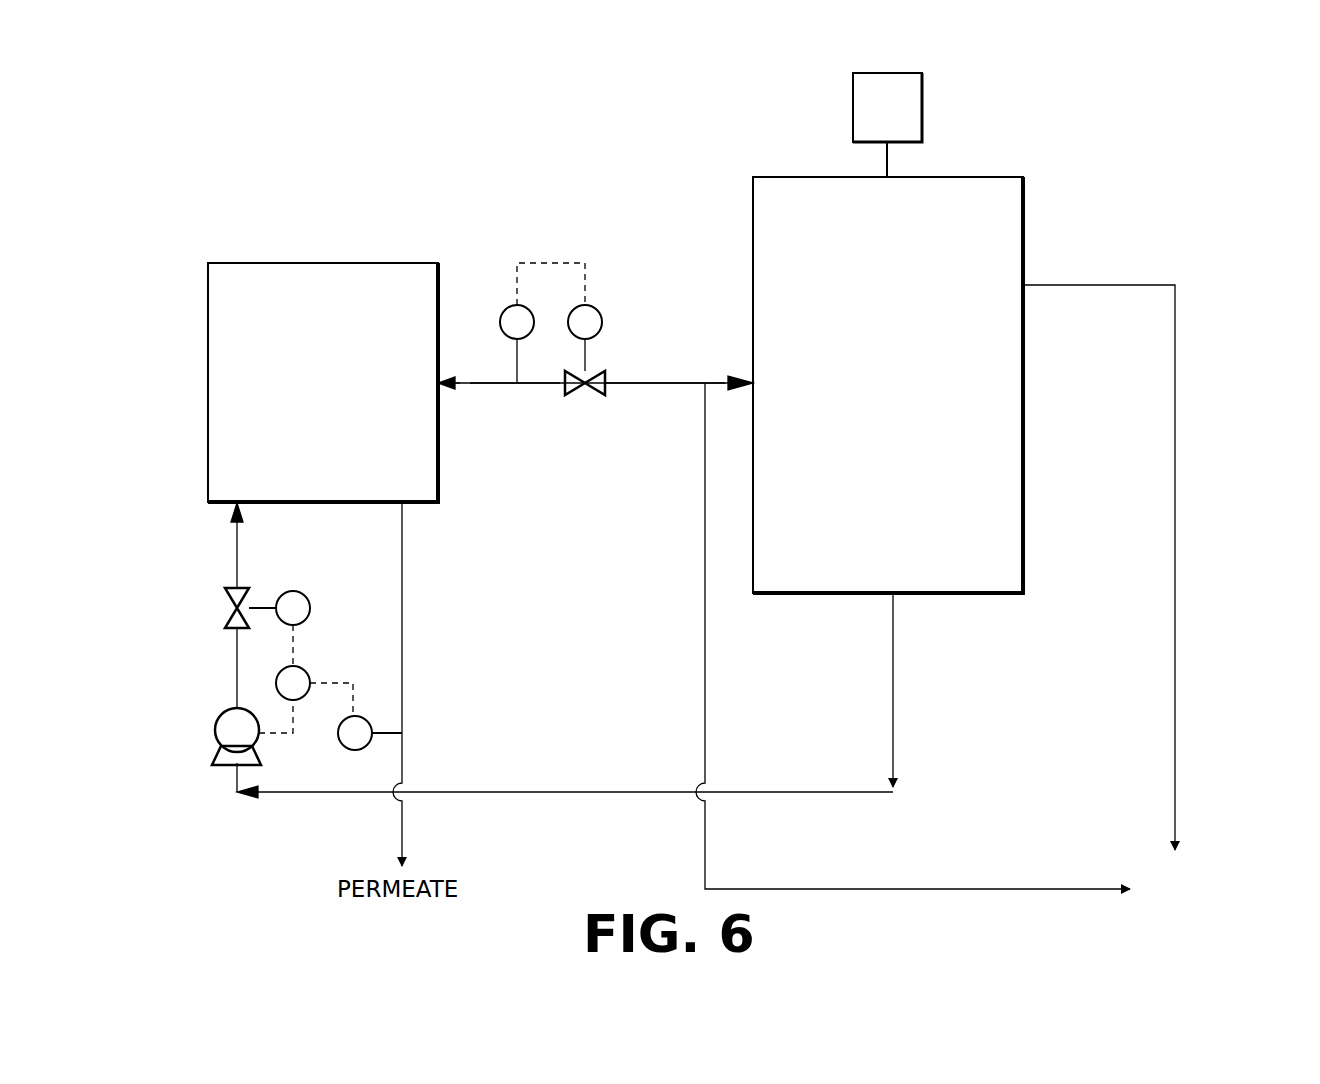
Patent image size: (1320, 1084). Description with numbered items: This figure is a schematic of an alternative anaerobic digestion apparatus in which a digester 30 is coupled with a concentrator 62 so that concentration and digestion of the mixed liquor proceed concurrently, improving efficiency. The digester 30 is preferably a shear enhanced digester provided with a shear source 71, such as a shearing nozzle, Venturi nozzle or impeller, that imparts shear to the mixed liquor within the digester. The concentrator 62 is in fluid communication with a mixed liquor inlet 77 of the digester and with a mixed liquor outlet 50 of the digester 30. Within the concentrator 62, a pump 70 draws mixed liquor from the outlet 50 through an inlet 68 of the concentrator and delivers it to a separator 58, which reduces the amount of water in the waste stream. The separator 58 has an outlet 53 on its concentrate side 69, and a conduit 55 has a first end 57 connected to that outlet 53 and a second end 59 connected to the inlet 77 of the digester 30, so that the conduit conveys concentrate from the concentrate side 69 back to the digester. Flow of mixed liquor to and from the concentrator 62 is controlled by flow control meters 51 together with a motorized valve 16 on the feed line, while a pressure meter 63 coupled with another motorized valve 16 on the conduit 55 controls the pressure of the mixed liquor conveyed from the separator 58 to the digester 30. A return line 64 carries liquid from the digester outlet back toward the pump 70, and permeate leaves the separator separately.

The motorized valve 16 is at (585, 389).
The digester 30 is at (972, 262).
The mixed liquor outlet 50 is at (1025, 288).
The flow control meter 51 is at (305, 668).
The outlet 53 is at (440, 383).
The conduit 55 is at (508, 385).
The first end 57 is at (440, 385).
The separator 58 is at (400, 453).
The second end 59 is at (751, 388).
The concentrator 62 is at (172, 820).
The pressure meter 63 is at (506, 310).
The recycle line 64 is at (575, 792).
The inlet 68 is at (234, 508).
The concentrate side 69 is at (438, 338).
The pump 70 is at (220, 724).
The shear source 71 is at (900, 105).
The mixed liquor inlet 77 is at (752, 382).